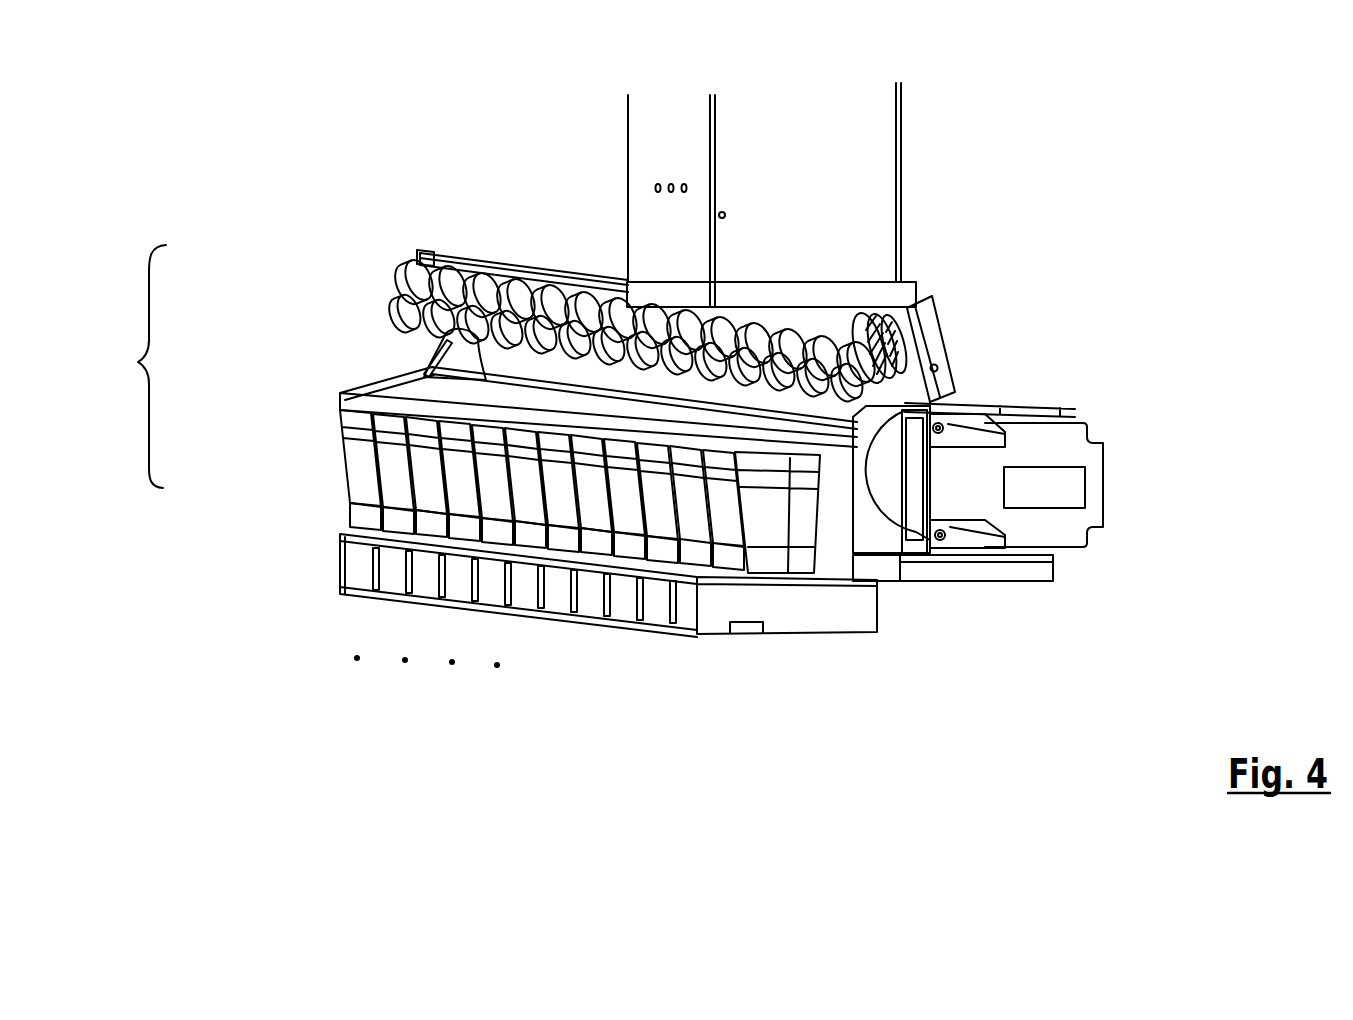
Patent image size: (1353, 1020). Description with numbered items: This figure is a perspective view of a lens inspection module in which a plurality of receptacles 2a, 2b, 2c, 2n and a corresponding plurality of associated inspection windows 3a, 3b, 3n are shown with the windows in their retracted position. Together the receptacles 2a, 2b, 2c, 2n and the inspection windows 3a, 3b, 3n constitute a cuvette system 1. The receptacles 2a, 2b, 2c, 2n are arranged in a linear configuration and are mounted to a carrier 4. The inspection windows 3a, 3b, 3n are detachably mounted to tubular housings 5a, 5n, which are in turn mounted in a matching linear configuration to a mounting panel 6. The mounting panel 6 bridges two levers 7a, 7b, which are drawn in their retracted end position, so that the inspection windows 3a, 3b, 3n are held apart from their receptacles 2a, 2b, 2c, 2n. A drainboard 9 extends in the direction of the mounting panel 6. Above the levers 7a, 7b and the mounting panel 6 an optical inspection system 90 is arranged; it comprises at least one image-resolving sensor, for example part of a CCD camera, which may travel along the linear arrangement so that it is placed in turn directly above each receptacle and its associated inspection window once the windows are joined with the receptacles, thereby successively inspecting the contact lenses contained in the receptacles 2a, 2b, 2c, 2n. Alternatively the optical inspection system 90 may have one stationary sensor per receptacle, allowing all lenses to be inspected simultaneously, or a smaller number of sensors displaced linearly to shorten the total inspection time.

The cuvette system 1 is at (130, 362).
The receptacle 2n is at (343, 486).
The receptacle 2a is at (763, 536).
The receptacle 2b is at (719, 529).
The receptacle 2c is at (690, 523).
The inspection window 3n is at (406, 293).
The inspection window 3a is at (843, 360).
The inspection window 3b is at (808, 350).
The carrier 4 is at (848, 610).
The tubular housing 5a is at (1040, 412).
The tubular housing 5n is at (430, 250).
The mounting panel 6 is at (532, 265).
The lever 7a is at (947, 384).
The lever 7b is at (445, 362).
The drainboard 9 is at (438, 370).
The optical inspection system 90 is at (650, 126).